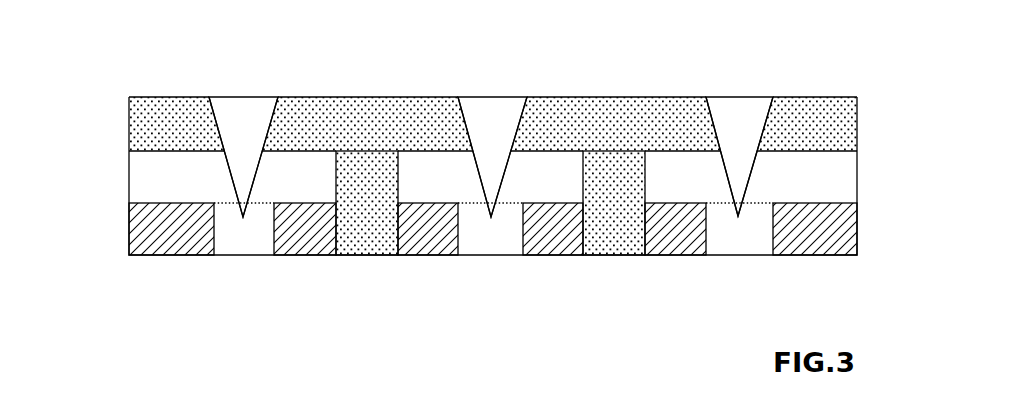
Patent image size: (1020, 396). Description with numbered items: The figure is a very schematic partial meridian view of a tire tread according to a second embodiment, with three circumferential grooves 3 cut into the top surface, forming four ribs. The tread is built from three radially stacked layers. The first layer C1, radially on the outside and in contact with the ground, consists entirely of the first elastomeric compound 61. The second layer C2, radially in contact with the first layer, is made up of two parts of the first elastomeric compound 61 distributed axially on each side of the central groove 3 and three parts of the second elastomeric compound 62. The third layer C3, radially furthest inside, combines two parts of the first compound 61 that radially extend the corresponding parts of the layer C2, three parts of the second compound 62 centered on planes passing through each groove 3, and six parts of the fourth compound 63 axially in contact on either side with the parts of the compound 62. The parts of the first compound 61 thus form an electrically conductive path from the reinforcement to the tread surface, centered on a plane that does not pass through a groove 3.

The circumferential groove 3 is at (250, 113).
The first elastomeric compound 61 is at (340, 117).
The second elastomeric compound 62 is at (553, 165).
The fourth compound 63 is at (178, 238).
The first layer C1 is at (118, 125).
The second layer C2 is at (118, 177).
The third layer C3 is at (118, 229).